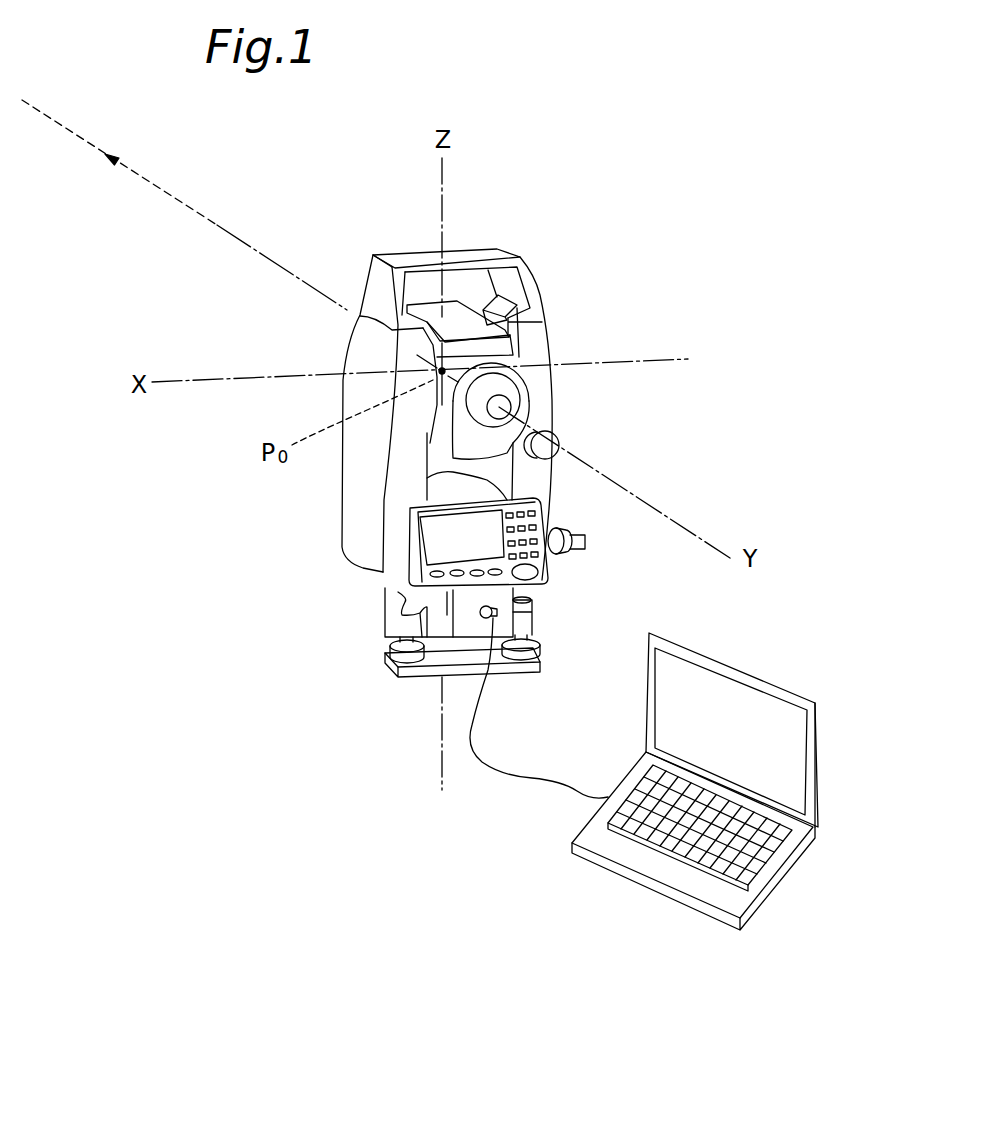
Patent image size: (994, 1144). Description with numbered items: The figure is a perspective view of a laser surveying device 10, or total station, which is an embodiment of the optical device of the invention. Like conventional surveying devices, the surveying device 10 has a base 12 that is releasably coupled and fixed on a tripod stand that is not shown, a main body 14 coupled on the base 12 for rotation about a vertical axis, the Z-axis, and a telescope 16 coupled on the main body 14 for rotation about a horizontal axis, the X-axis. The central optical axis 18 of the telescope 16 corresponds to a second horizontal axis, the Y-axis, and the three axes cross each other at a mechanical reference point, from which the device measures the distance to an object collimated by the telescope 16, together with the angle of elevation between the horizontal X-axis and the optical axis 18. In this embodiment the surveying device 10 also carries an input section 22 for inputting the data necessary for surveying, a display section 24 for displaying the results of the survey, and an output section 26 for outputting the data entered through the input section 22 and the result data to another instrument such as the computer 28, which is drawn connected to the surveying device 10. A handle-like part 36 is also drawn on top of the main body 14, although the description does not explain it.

The laser surveying device 10 is at (537, 272).
The base 12 is at (388, 670).
The main body 14 is at (353, 522).
The telescope 16 is at (503, 352).
The central optical axis 18 is at (288, 272).
The input section 22 is at (523, 525).
The display section 24 is at (433, 543).
The output section 26 is at (497, 613).
The computer 28 is at (697, 910).
The handle / guide 36 is at (435, 312).